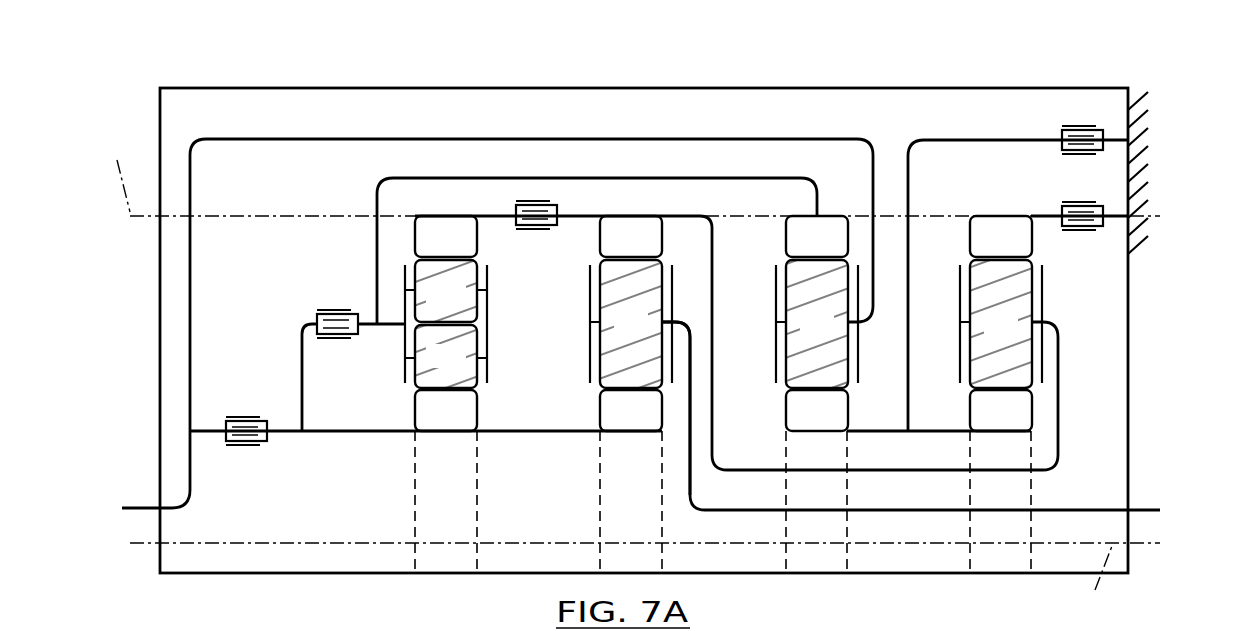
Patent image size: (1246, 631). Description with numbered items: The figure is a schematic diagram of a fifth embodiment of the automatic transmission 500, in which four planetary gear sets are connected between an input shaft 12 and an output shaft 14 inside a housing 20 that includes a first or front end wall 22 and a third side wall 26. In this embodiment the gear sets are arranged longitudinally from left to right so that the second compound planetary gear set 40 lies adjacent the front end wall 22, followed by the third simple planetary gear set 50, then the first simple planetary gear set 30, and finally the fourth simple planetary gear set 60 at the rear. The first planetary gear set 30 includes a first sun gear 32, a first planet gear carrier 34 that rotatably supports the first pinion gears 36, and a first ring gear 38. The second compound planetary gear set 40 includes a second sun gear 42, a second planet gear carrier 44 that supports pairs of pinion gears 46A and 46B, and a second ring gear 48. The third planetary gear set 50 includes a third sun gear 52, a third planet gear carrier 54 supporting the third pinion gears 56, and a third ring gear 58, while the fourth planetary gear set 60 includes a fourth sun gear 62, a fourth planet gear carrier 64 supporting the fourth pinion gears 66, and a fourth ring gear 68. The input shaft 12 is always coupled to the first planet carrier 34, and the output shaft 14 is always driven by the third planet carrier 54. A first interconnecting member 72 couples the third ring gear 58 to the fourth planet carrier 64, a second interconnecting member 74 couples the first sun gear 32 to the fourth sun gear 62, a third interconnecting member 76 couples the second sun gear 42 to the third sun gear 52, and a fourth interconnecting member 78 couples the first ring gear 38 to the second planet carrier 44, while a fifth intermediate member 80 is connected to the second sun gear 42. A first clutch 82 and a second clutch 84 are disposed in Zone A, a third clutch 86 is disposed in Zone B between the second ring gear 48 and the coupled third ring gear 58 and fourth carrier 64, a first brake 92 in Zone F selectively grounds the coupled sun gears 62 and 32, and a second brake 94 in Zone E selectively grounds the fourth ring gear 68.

The input shaft 12 is at (143, 512).
The output shaft 14 is at (1148, 512).
The housing 20 is at (692, 78).
The first or front end wall 22 is at (160, 331).
The third side wall 26 is at (488, 88).
The first simple planetary gear set 30 is at (863, 342).
The first sun gear 32 is at (803, 423).
The first planet gear carrier 34 is at (858, 284).
The first plurality of pinion or planet gears 36 is at (803, 337).
The first ring gear 38 is at (803, 249).
The second compound planetary gear set 40 is at (407, 349).
The second sun gear 42 is at (432, 423).
The second planet gear carrier 44 is at (405, 290).
The first pinion or planet gears of second plurality of pairs 46A is at (426, 304).
The second pinion or planet gears of second plurality of pairs 46B is at (426, 369).
The second ring gear 48 is at (432, 249).
The third simple planetary gear set 50 is at (591, 349).
The third sun gear 52 is at (617, 423).
The third planet gear carrier 54 is at (673, 286).
The third plurality of pinion or planet gears 56 is at (617, 337).
The third ring gear 58 is at (617, 249).
The fourth simple planetary gear set 60 is at (1068, 323).
The fourth sun gear 62 is at (987, 423).
The fourth planet gear carrier 64 is at (1042, 288).
The fourth plurality of pinion or planet gears 66 is at (987, 337).
The fourth ring gear 68 is at (987, 249).
The first shaft, quill or interconnecting member 72 is at (877, 470).
The second shaft, quill or interconnecting member 74 is at (920, 431).
The third shaft, quill or interconnecting member 76 is at (560, 433).
The fourth shaft, quill or interconnecting member 78 is at (657, 178).
The fifth shaft, quill or intermediate member 80 is at (318, 432).
The first clutch 82 is at (240, 417).
The second clutch 84 is at (330, 310).
The third clutch 86 is at (528, 229).
The first brake 92 is at (1075, 126).
The second brake 94 is at (1075, 202).
The automatic transmission 500 is at (1166, 115).